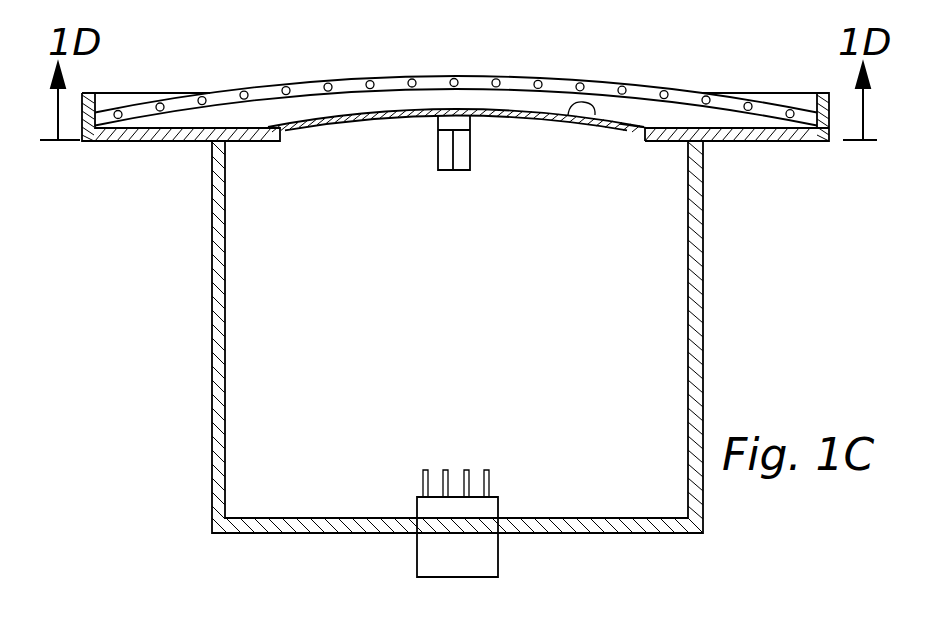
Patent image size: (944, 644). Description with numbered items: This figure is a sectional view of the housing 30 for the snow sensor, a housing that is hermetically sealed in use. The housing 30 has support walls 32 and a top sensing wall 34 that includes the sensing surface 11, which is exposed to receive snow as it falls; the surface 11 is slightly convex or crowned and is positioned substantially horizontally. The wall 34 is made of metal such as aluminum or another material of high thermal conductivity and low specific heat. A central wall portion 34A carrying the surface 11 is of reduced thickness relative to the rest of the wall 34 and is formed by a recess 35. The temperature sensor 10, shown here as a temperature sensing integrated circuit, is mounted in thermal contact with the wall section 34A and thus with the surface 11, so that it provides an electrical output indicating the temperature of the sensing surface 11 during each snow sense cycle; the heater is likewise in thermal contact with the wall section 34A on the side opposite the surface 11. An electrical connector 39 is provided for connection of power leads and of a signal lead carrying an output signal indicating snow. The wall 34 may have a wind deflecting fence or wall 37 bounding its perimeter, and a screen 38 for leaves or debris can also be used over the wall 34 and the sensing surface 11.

The temperature sensor 10 is at (470, 160).
The sensing surface 11 is at (593, 117).
The housing 30 is at (459, 337).
The support walls 32 is at (222, 415).
The top sensing wall 34 is at (771, 141).
The central wall portion 34A is at (522, 119).
The recess 35 is at (628, 133).
The wind deflecting fence 37 is at (453, 129).
The screen 38 is at (375, 88).
The electrical connector 39 is at (499, 553).